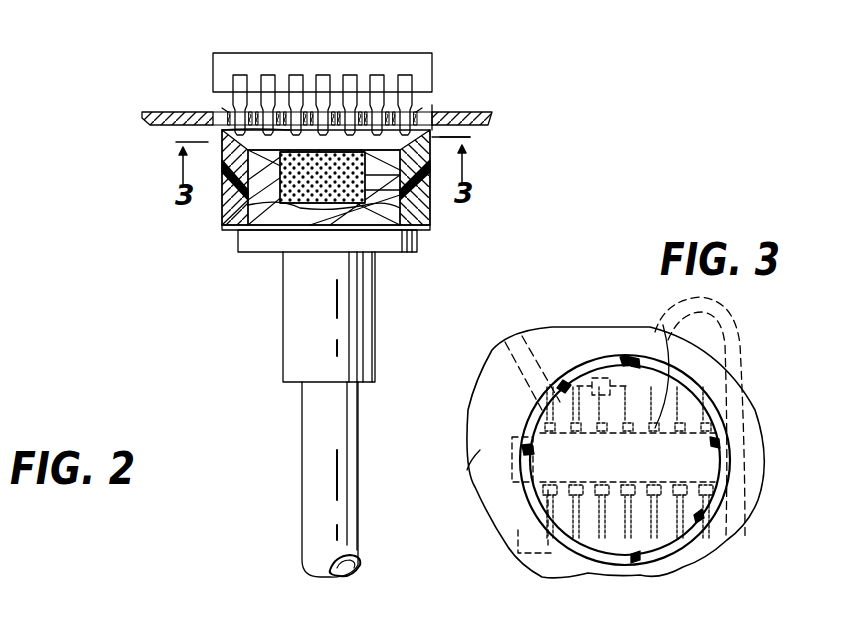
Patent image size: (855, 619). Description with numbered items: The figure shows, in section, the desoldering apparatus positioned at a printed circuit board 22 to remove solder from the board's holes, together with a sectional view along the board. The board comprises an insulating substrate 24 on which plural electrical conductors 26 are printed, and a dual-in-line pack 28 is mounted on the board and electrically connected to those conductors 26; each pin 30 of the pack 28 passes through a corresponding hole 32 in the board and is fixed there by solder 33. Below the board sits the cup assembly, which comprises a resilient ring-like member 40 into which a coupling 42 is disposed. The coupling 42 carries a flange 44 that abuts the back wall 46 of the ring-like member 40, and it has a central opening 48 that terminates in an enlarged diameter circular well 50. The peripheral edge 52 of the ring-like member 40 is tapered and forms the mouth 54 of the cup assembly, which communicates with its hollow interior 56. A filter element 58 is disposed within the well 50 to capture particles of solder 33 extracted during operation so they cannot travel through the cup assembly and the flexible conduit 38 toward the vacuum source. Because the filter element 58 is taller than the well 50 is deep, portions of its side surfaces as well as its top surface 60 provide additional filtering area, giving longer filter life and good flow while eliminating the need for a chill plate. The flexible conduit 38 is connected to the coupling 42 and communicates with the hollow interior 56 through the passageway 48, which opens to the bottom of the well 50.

In FIG. 2, the panel 22 is at (470, 114).
In FIG. 3, the panel 22 is at (578, 350).
In FIG. 2, the substrate 24 is at (440, 118).
In FIG. 3, the substrate 24 is at (542, 345).
In FIG. 3, the electrical conductors 26 is at (686, 307).
In FIG. 2, the dual-in-line pack 28 is at (412, 62).
In FIG. 3, the dual-in-line pack 28 is at (700, 452).
In FIG. 2, the pin 30 is at (264, 78).
In FIG. 3, the pin 30 is at (620, 428).
In FIG. 2, the hole 32 is at (230, 118).
In FIG. 3, the hole 32 is at (663, 345).
In FIG. 2, the solder 33 is at (232, 120).
In FIG. 3, the solder 33 is at (582, 495).
In FIG. 2, the flexible conduit 38 is at (312, 475).
In FIG. 2, the resilient ring-like member 40 is at (250, 232).
In FIG. 2, the coupling 42 is at (356, 302).
In FIG. 2, the flange 44 is at (278, 250).
In FIG. 2, the back wall 46 is at (410, 250).
In FIG. 2, the central opening 48 is at (335, 215).
In FIG. 2, the circular well 50 is at (395, 210).
In FIG. 2, the peripheral edge 52 is at (222, 133).
In FIG. 3, the peripheral edge 52 is at (532, 425).
In FIG. 2, the mouth 54 is at (218, 180).
In FIG. 2, the hollow interior 56 is at (232, 228).
In FIG. 2, the filter element 58 is at (372, 205).
In FIG. 2, the top surface 60 is at (445, 135).